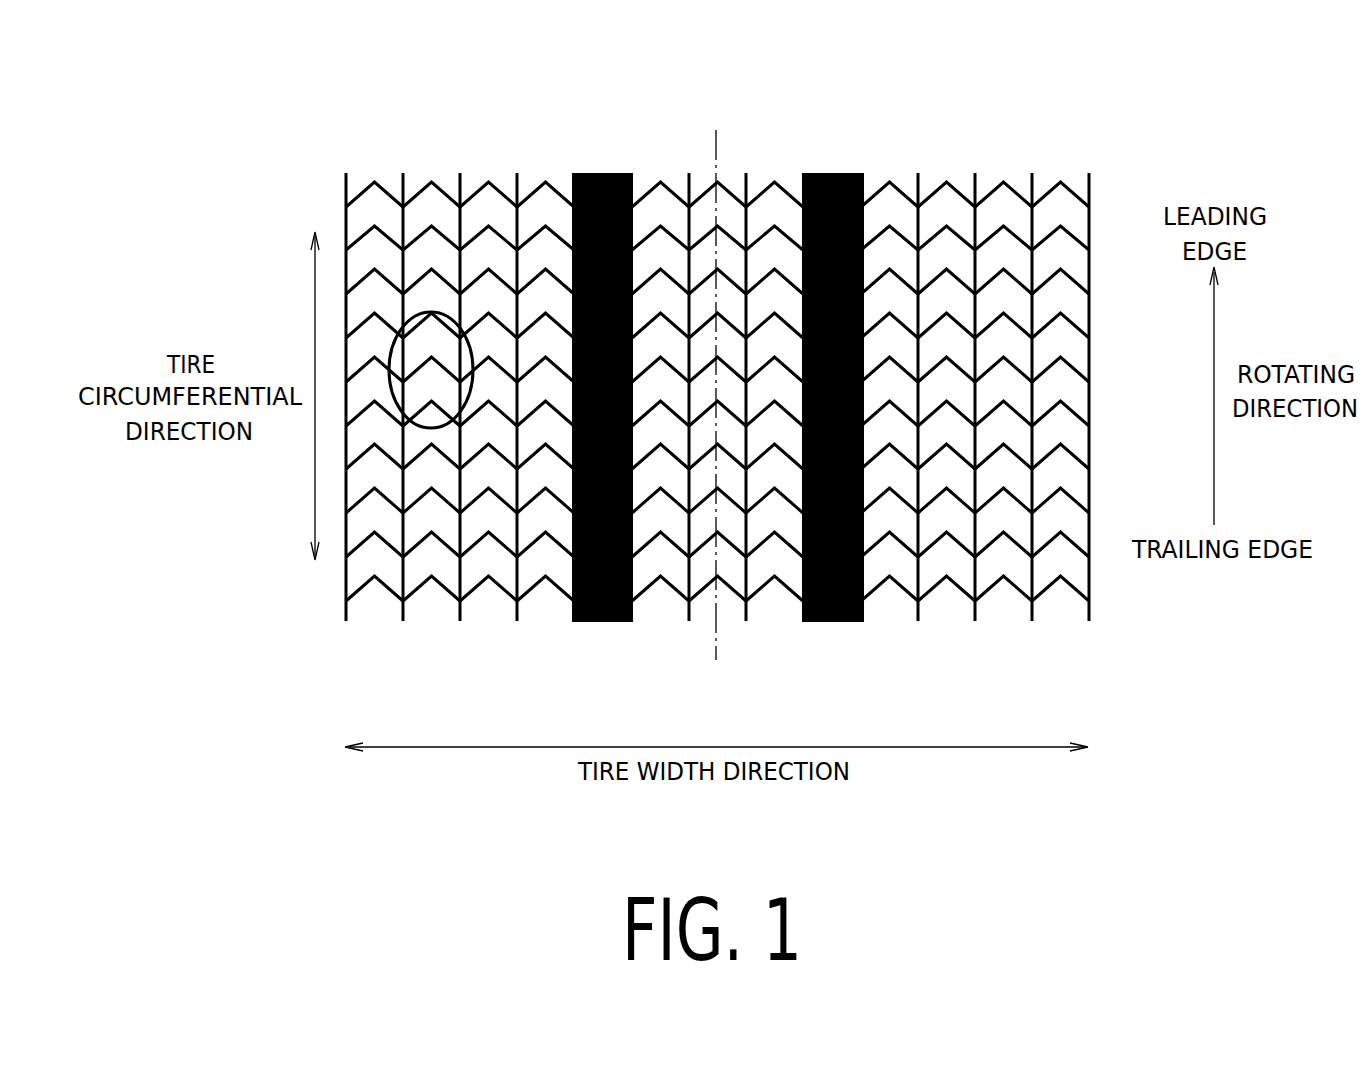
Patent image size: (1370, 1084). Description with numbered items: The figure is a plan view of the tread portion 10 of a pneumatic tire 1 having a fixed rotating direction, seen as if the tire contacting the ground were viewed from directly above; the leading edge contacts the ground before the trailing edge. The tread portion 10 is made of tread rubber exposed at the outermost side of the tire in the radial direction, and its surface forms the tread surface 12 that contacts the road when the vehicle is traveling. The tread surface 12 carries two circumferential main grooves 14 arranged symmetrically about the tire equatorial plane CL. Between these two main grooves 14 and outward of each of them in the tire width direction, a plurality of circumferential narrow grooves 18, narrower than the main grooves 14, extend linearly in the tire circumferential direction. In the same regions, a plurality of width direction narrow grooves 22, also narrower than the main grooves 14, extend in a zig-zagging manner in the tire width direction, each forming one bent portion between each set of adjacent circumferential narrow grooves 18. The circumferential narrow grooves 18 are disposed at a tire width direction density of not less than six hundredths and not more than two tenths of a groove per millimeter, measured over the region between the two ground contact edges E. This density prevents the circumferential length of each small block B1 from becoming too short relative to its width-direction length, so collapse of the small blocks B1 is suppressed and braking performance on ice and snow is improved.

The pneumatic tire 1 is at (416, 130).
The tread portion 10 is at (524, 124).
The tread surface 12 is at (677, 185).
The circumferential main groove 14 is at (603, 622).
The circumferential narrow groove 18 is at (437, 600).
The width direction narrow groove 22 is at (477, 547).
The small block B1 is at (438, 205).
The ground contact edge E is at (344, 128).
The tire equatorial plane CL is at (719, 381).